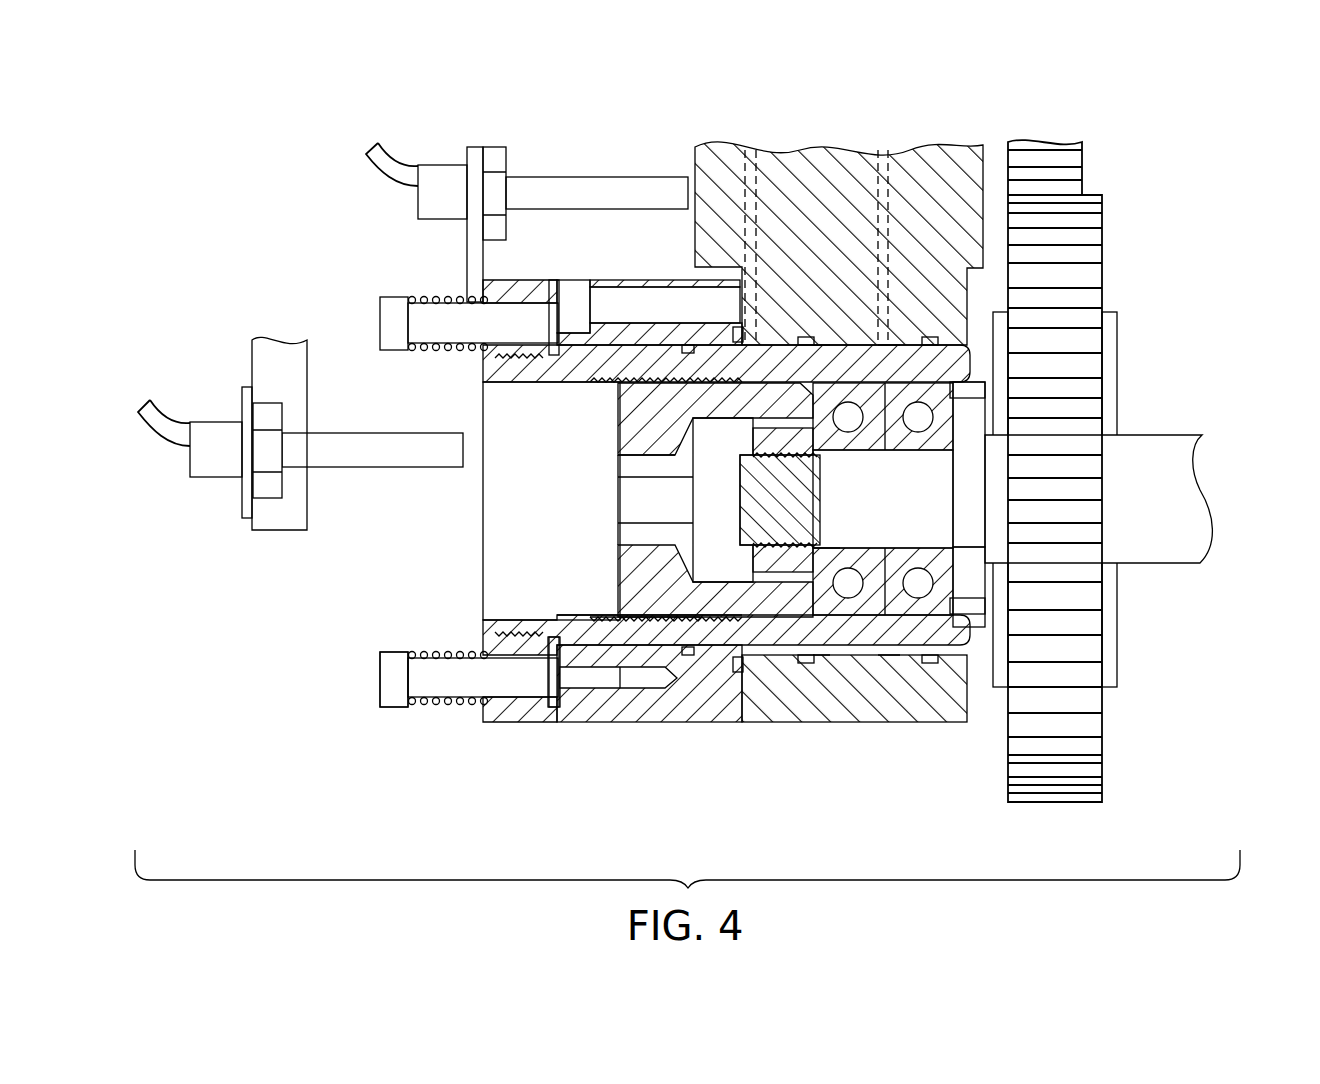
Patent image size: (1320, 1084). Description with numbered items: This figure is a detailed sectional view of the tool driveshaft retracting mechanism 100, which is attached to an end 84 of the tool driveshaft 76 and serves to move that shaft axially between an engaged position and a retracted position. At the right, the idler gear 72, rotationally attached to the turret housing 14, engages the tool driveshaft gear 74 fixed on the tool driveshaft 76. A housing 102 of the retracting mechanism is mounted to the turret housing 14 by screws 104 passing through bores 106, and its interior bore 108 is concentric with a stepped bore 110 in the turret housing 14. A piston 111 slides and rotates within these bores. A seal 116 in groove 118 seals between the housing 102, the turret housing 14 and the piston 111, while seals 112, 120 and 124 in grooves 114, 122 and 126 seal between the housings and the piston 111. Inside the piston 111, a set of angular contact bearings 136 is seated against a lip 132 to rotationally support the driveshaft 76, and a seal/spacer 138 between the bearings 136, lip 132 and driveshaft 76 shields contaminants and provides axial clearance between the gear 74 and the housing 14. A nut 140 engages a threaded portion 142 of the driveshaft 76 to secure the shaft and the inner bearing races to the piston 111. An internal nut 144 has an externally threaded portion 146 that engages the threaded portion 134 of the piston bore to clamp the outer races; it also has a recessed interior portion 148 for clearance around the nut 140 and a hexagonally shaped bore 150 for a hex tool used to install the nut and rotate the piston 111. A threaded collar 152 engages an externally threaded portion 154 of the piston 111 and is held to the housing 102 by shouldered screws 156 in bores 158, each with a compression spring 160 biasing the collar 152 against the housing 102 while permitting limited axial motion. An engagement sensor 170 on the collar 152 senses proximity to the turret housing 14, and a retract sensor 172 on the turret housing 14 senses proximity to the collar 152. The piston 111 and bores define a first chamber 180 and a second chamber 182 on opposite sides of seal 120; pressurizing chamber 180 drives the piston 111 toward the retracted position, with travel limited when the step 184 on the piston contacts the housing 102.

The turret housing 14 is at (835, 180).
The idler gear 72 is at (1072, 176).
The tool driveshaft gear 74 is at (1053, 794).
The tool driveshaft 76 is at (1150, 460).
The end of tool driveshaft 84 is at (884, 513).
The tool driveshaft retracting mechanism 100 is at (688, 722).
The housing 102 is at (610, 700).
The screws 104 is at (605, 300).
The bores 106 is at (666, 292).
The interior bore 108 is at (590, 690).
The stepped bore 110 is at (862, 658).
The piston 111 is at (485, 612).
The seal 112 is at (590, 380).
The groove 114 is at (618, 383).
The seal 116 is at (738, 345).
The groove 118 is at (840, 440).
The seal 120 is at (806, 340).
The groove 122 is at (820, 345).
The seal 124 is at (928, 345).
The groove 126 is at (963, 345).
The lip 132 is at (970, 388).
The threaded portion 134 is at (590, 617).
The angular contact bearings 136 is at (965, 560).
The seal/spacer 138 is at (962, 440).
The nut 140 is at (780, 557).
The threaded portion 142 is at (737, 458).
The internal nut 144 is at (630, 447).
The externally threaded portion 146 is at (655, 422).
The recessed interior portion 148 is at (722, 590).
The hexagonally shaped bore 150 is at (625, 480).
The threaded collar 152 is at (500, 722).
The externally threaded portion 154 is at (480, 360).
The shouldered screws 156 is at (392, 668).
The bores 158 is at (543, 690).
The compression spring 160 is at (427, 297).
The engagement sensor 170 is at (530, 192).
The retract sensor 172 is at (318, 452).
The first chamber 180 is at (890, 345).
The second chamber 182 is at (752, 345).
The step 184 is at (825, 576).